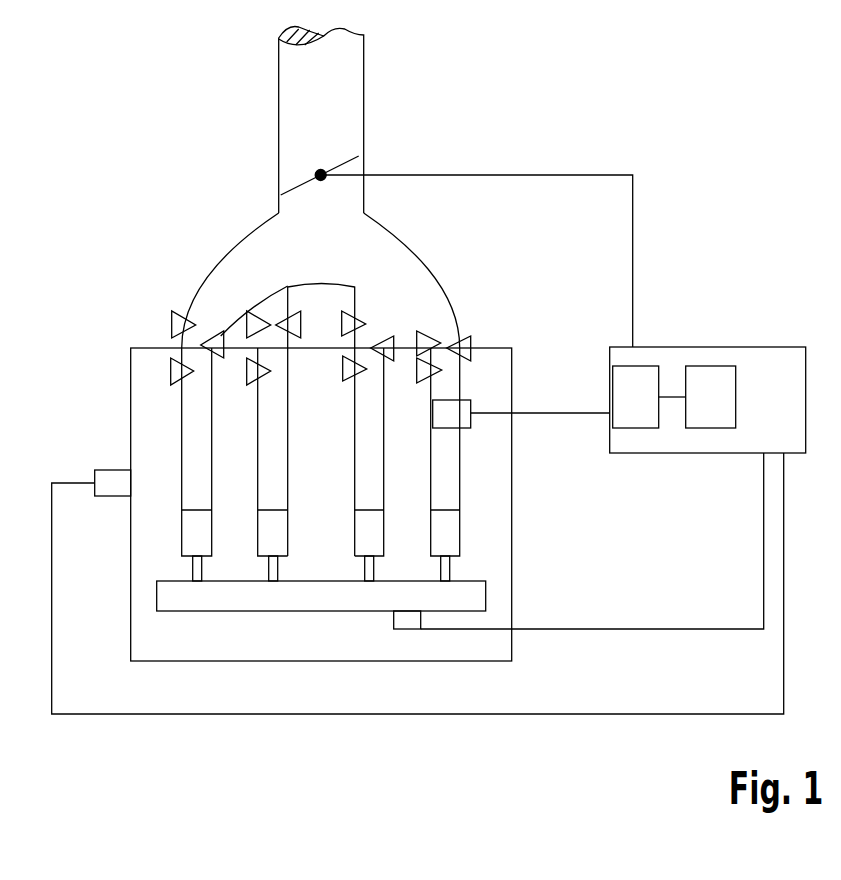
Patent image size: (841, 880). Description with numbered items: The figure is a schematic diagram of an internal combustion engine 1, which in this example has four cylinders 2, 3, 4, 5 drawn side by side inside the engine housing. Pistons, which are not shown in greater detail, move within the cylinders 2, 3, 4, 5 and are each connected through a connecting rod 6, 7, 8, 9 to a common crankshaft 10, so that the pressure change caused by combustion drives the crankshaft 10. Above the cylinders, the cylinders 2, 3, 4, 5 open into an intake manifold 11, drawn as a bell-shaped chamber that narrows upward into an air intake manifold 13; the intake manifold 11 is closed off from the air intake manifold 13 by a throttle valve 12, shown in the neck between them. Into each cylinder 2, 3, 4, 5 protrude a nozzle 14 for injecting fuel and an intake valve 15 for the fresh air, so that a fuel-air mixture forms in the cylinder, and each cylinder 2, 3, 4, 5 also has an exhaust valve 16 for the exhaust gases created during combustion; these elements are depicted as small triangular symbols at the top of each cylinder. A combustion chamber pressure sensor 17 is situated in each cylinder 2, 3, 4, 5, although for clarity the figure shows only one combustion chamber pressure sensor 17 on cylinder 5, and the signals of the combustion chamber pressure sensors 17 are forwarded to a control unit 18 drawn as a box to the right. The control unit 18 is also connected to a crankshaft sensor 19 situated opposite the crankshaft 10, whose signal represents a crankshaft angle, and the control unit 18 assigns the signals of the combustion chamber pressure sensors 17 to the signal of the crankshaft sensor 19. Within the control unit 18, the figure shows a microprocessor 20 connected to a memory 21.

The internal combustion engine 1 is at (132, 402).
The cylinder 2 is at (187, 533).
The cylinder 3 is at (265, 533).
The cylinder 4 is at (380, 532).
The cylinder 5 is at (455, 532).
The connecting rod 6 is at (194, 570).
The connecting rod 7 is at (270, 570).
The connecting rod 8 is at (366, 568).
The connecting rod 9 is at (442, 568).
The crankshaft 10 is at (487, 597).
The intake manifold 11 is at (263, 220).
The throttle valve 12 is at (349, 160).
The air intake manifold 13 is at (288, 95).
The nozzle 14 is at (173, 327).
The intake valve 15 is at (182, 380).
The exhaust valve 16 is at (287, 325).
The combustion chamber pressure sensor 17 is at (473, 409).
The control unit 18 is at (775, 350).
The crankshaft sensor 19 is at (395, 620).
The microprocessor 20 is at (637, 432).
The memory 21 is at (713, 432).